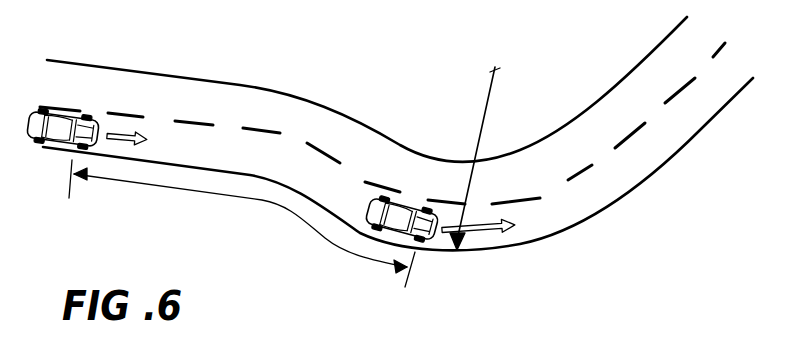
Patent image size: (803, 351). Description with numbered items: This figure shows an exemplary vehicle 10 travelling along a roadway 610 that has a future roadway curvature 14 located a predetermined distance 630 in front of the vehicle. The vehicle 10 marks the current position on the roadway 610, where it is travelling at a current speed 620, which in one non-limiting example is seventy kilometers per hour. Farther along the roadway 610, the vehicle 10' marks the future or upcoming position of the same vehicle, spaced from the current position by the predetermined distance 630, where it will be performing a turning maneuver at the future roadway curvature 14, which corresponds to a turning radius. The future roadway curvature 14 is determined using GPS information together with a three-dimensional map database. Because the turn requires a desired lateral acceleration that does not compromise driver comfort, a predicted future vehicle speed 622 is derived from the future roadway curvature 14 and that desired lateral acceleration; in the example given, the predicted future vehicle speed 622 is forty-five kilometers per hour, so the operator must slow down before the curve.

The vehicle 10 is at (63, 85).
The vehicle at future position 10' is at (417, 179).
The future roadway curvature 14 is at (484, 112).
The roadway 610 is at (595, 219).
The current speed 620 is at (123, 130).
The predicted future vehicle speed 622 is at (477, 233).
The predetermined distance 630 is at (272, 205).